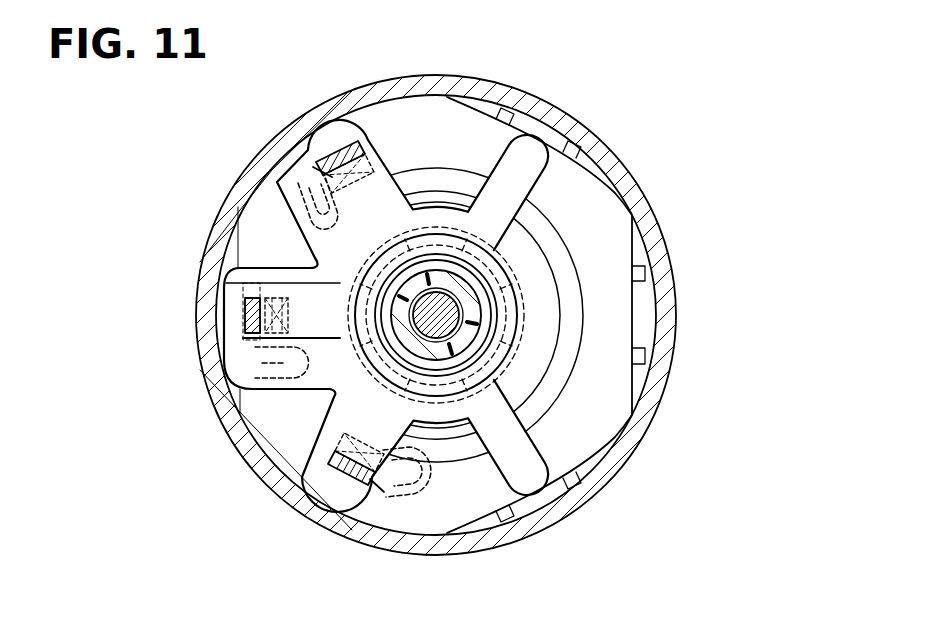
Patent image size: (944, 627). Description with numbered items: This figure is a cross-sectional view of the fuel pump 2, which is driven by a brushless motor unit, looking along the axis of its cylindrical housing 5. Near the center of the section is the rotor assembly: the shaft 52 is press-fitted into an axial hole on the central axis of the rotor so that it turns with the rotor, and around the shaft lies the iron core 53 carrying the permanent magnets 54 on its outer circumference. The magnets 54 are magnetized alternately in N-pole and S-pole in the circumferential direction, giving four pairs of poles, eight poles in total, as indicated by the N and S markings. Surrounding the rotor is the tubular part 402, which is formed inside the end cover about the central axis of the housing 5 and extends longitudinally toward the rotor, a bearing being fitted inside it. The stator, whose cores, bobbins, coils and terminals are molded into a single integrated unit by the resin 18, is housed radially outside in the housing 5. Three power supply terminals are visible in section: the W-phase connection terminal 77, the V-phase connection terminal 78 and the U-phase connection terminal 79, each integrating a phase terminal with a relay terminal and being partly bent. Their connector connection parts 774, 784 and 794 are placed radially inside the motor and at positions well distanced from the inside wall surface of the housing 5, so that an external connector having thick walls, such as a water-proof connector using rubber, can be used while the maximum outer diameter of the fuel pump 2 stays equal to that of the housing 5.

The fuel pump 2 is at (583, 106).
The housing 5 is at (541, 100).
The resin 18 is at (468, 145).
The tubular part 402 is at (468, 288).
The shaft 52 is at (452, 312).
The iron core 53 is at (485, 333).
The permanent magnets 54 is at (518, 357).
The W-phase connection terminal 77 is at (356, 492).
The connector connection part 774 is at (347, 473).
The V-phase connection terminal 78 is at (243, 328).
The connector connection part 784 is at (245, 308).
The U-phase connection terminal 79 is at (328, 154).
The connector connection part 794 is at (344, 150).